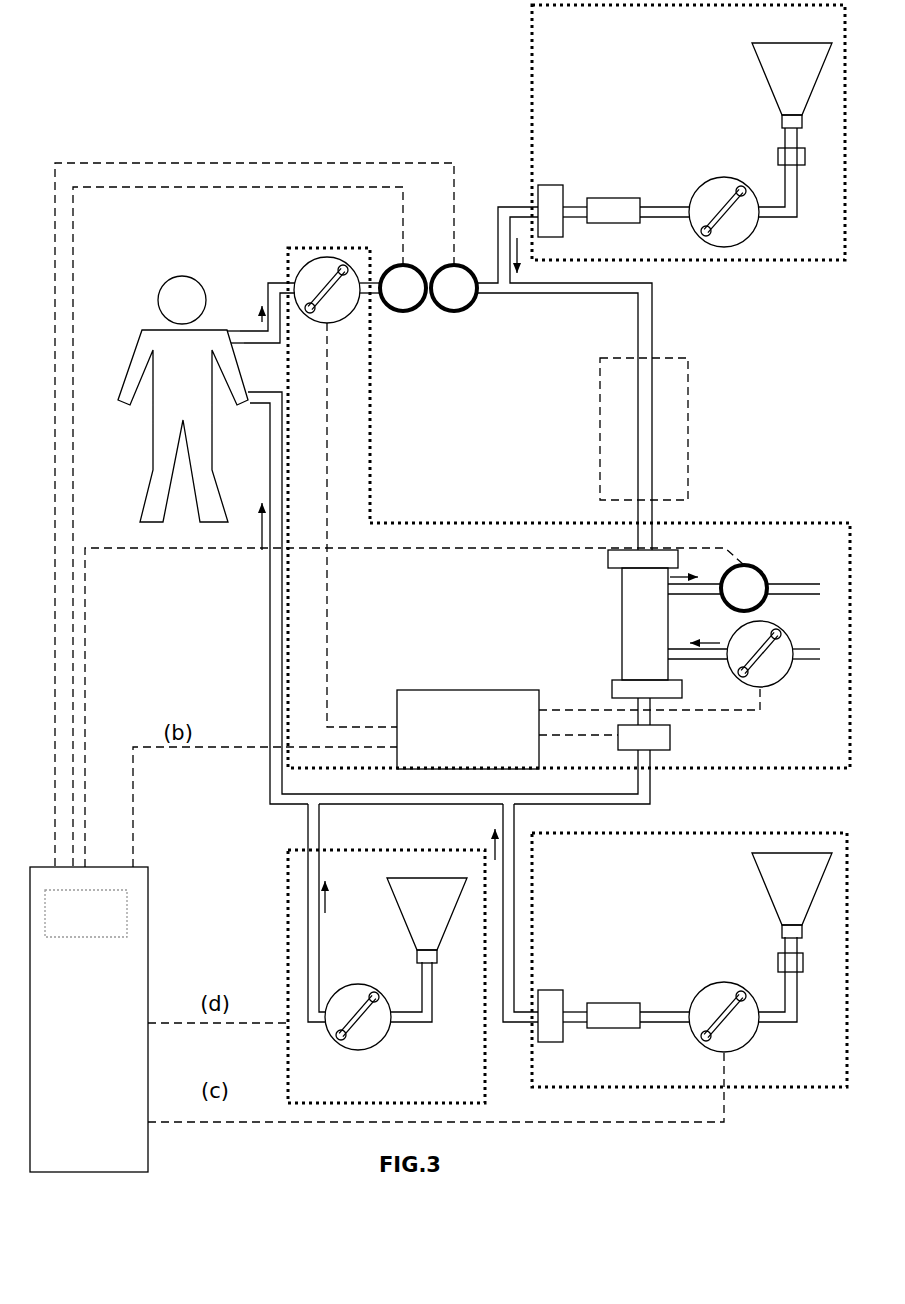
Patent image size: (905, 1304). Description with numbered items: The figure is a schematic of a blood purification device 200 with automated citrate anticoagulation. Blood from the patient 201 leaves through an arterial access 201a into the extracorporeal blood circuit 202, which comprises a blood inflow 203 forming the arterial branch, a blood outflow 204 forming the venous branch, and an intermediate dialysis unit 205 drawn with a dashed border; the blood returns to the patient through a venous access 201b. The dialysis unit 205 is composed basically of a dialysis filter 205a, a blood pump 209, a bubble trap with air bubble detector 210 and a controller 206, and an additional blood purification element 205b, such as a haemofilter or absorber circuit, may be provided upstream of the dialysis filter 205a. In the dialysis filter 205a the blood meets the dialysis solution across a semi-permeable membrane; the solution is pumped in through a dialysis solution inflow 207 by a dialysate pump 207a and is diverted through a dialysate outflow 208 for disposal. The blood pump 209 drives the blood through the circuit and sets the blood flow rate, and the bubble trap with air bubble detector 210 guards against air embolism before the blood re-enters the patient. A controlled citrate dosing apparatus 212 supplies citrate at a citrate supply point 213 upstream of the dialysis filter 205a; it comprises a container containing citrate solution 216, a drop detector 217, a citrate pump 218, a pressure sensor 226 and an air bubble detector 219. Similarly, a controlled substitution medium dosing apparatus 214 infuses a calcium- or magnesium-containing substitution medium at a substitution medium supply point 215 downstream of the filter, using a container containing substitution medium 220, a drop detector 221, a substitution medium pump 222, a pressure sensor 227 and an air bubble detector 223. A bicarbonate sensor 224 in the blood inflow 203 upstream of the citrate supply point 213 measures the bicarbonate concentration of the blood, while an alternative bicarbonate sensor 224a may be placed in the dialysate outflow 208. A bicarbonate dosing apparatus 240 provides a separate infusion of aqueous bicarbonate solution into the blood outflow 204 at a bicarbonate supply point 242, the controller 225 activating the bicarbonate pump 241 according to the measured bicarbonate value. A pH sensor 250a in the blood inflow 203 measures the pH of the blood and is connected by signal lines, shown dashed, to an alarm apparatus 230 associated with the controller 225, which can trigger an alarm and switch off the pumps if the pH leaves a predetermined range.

The blood purification device 200 is at (350, 118).
The patient 201 is at (183, 399).
The arterial access 201a is at (233, 328).
The venous access 201b is at (257, 403).
The extracorporeal blood circuit 202 is at (462, 380).
The blood inflow 203 is at (273, 287).
The blood outflow 204 is at (270, 672).
The dialysis unit 205 is at (795, 522).
The dialysis filter 205a is at (622, 622).
The additional blood purification element 205b is at (683, 430).
The controller 206 is at (468, 729).
The dialysis solution inflow 207 is at (812, 658).
The dialysate pump 207a is at (782, 650).
The dialysate outflow 208 is at (788, 590).
The blood pump 209 is at (323, 265).
The bubble trap with air bubble detector 210 is at (670, 737).
The citrate dosing apparatus 212 is at (532, 68).
The citrate supply point 213 is at (505, 285).
The substitution medium dosing apparatus 214 is at (735, 832).
The substitution medium supply point 215 is at (505, 806).
The container containing citrate solution 216 is at (773, 78).
The drop detector 217 is at (780, 163).
The citrate pump 218 is at (743, 222).
The air bubble detector 219 is at (550, 192).
The container containing substitution medium 220 is at (773, 893).
The drop detector 221 is at (778, 963).
The substitution medium pump 222 is at (742, 1030).
The air bubble detector 223 is at (548, 995).
The bicarbonate sensor 224 is at (412, 302).
The bicarbonate sensor 224a is at (723, 571).
The controller 225 is at (89, 1019).
The pressure sensor 226 is at (622, 205).
The pressure sensor 227 is at (612, 1028).
The alarm apparatus 230 is at (86, 913).
The bicarbonate dosing apparatus 240 is at (288, 928).
The bicarbonate pump 241 is at (375, 1030).
The bicarbonate supply point 242 is at (310, 806).
The pH sensor 250a is at (460, 278).